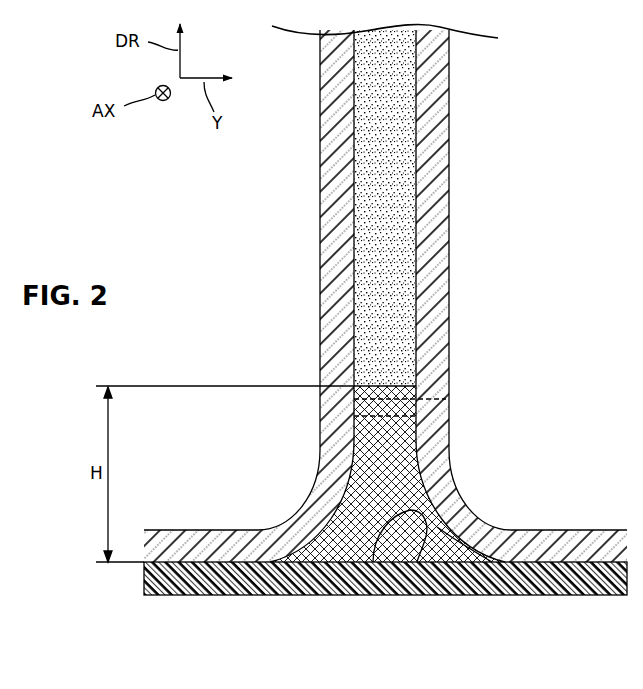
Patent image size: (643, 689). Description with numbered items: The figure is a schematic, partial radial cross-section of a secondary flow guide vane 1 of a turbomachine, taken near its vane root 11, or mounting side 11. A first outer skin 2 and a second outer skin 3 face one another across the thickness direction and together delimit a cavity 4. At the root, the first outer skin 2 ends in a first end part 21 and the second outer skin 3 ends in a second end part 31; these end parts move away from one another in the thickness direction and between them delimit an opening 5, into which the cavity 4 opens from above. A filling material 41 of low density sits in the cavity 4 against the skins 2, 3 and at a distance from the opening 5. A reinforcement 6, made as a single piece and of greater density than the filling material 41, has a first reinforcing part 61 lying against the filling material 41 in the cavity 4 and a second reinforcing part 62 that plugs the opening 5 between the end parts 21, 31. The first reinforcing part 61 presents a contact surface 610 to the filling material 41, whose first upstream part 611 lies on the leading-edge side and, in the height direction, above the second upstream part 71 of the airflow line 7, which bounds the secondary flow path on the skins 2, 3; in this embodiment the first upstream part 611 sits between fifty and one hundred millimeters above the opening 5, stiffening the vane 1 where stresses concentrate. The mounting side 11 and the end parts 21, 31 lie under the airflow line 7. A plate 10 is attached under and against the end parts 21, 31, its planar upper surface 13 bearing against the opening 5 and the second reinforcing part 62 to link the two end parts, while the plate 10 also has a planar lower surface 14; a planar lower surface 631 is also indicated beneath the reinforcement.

The guide vane 1 is at (540, 254).
The first outer skin 2 is at (300, 175).
The second outer skin 3 is at (436, 158).
The cavity 4 is at (392, 259).
The filling material 41 is at (380, 210).
The opening 5 is at (449, 526).
The reinforcement 6 is at (441, 478).
The airflow line 7 is at (387, 427).
The plate 10 is at (284, 572).
The vane root 11 is at (522, 494).
The planar upper surface 13 is at (340, 563).
The planar lower surface 14 is at (433, 596).
The first end part 21 is at (173, 545).
The second end part 31 is at (592, 545).
The first reinforcing part 61 is at (375, 400).
The second reinforcing part 62 is at (390, 562).
The second upstream part 71 is at (446, 399).
The contact surface 610 is at (392, 375).
The first upstream part 611 is at (380, 385).
The lower surface 631 is at (465, 590).